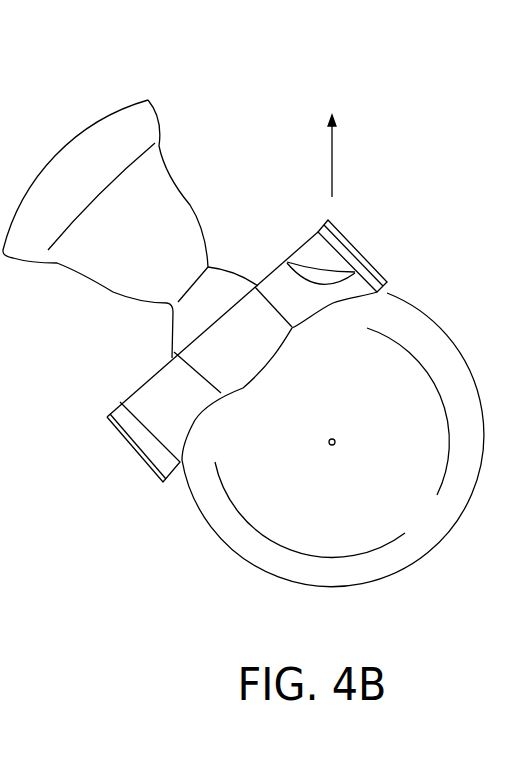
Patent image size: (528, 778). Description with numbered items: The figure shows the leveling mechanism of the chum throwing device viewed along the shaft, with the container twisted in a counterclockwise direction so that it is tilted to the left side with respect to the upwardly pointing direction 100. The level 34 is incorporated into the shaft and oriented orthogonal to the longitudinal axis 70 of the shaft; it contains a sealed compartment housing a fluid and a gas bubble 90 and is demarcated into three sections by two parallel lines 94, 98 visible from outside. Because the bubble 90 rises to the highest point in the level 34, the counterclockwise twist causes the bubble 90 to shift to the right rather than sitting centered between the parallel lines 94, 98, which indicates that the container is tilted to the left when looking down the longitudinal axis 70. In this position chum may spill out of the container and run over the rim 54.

The level 34 is at (122, 472).
The rim 54 is at (130, 106).
The longitudinal axis 70 is at (343, 440).
The gas bubble 90 is at (322, 262).
The parallel line 94 is at (187, 355).
The parallel line 98 is at (257, 283).
The upwardly pointing direction 100 is at (334, 140).